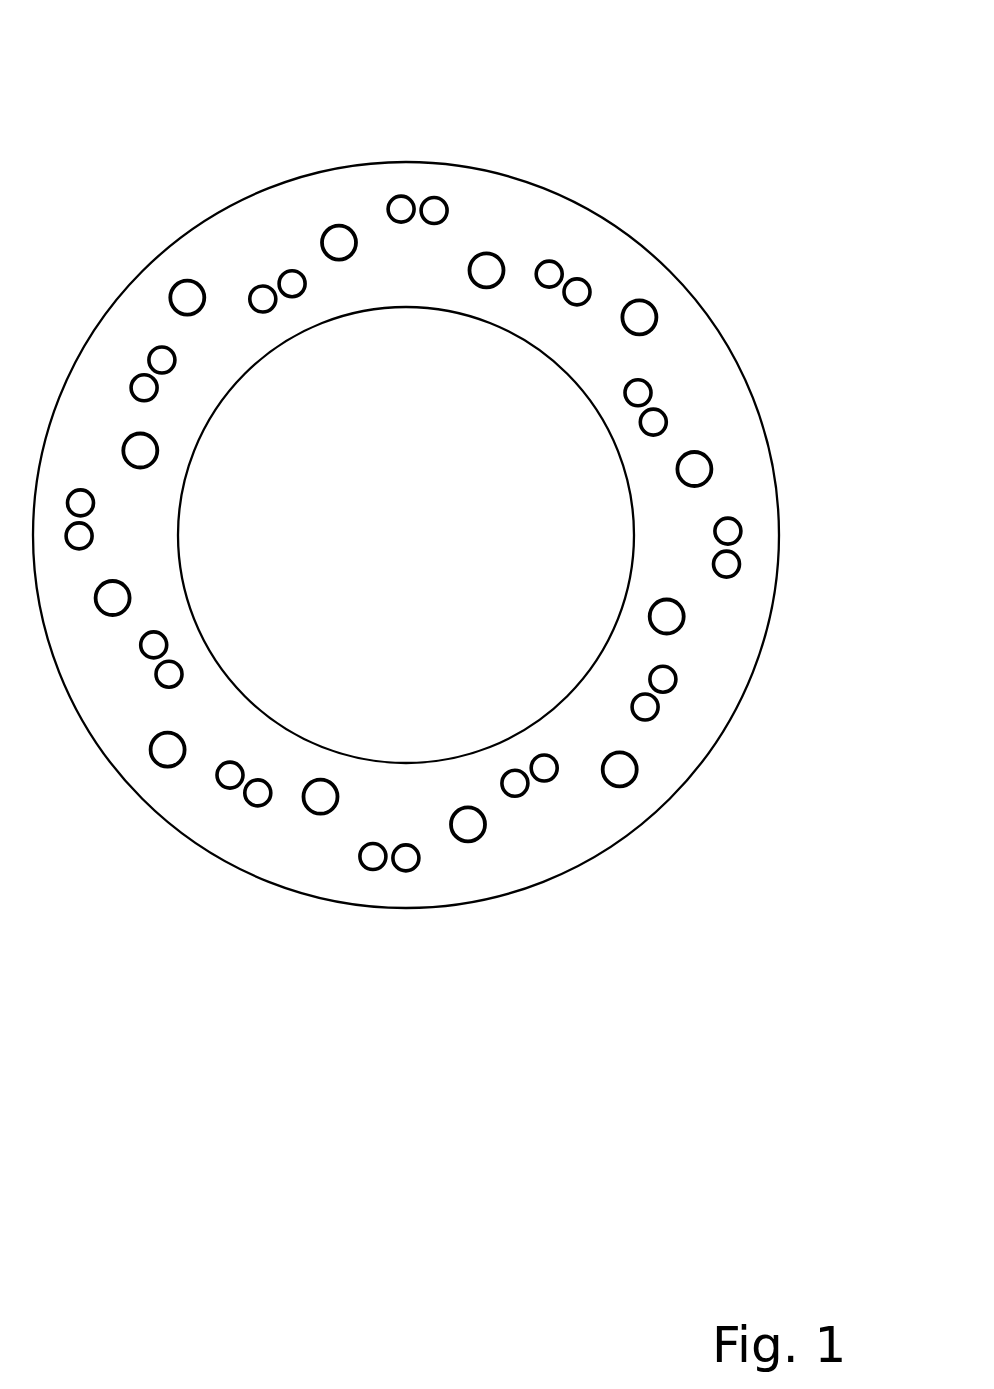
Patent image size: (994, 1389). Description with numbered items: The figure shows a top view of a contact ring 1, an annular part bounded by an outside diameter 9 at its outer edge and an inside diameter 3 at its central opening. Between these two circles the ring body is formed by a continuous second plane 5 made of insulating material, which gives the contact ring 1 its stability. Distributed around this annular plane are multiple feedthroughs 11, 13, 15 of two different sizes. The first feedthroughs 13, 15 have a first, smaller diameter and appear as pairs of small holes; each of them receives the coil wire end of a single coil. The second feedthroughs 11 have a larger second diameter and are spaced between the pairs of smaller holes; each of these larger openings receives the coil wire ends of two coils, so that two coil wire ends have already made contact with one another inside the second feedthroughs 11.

The contact ring 1 is at (448, 56).
The inside diameter 3 is at (300, 333).
The second plane 5 is at (538, 848).
The outside diameter 9 is at (665, 805).
The second feedthroughs 11 is at (187, 294).
The first feedthroughs 13 is at (578, 290).
The first feedthroughs 15 is at (550, 278).